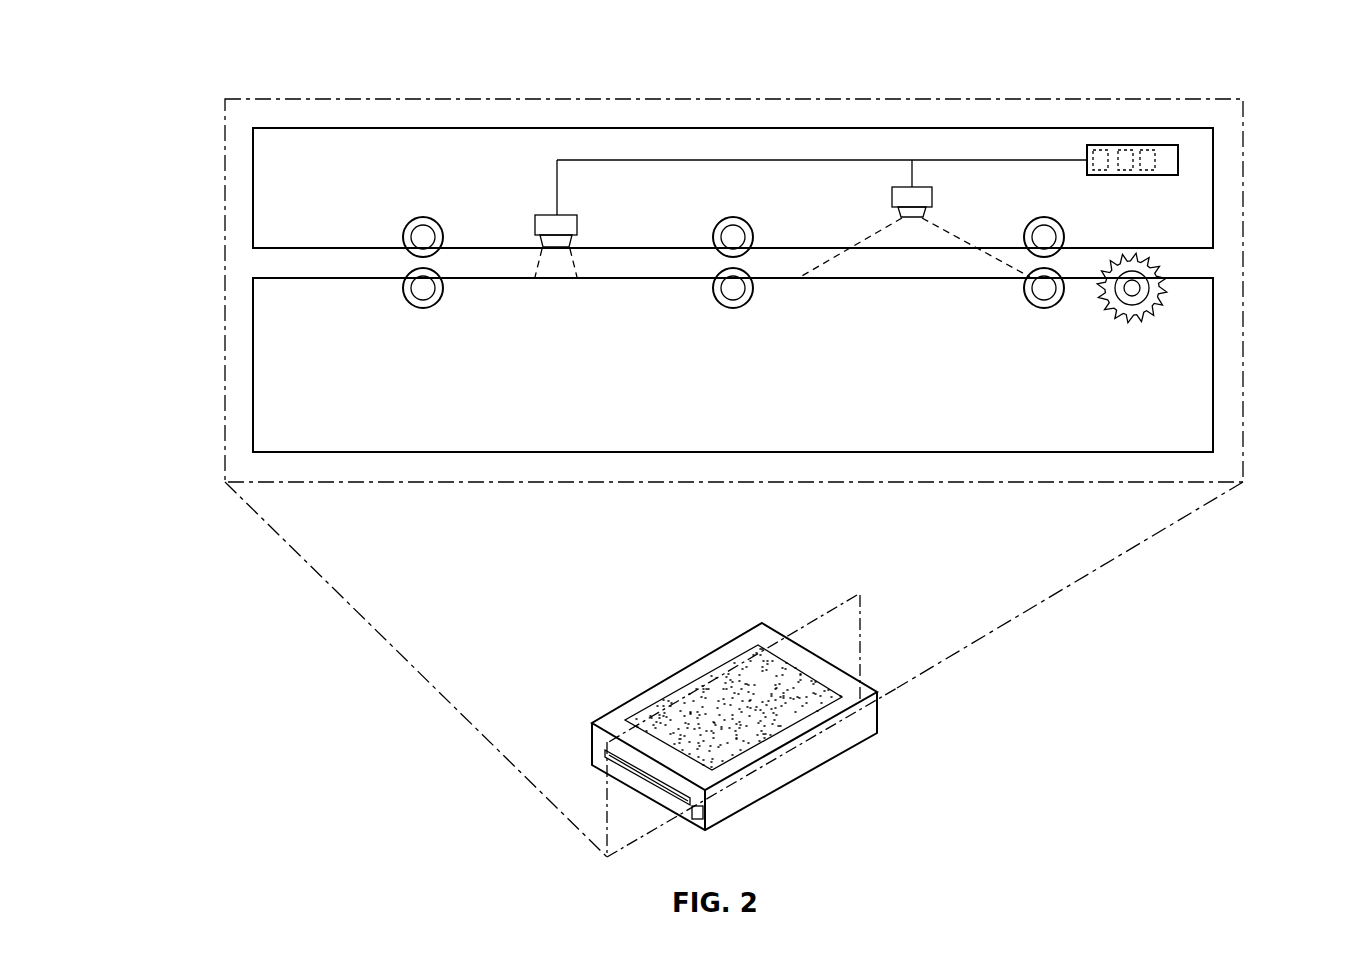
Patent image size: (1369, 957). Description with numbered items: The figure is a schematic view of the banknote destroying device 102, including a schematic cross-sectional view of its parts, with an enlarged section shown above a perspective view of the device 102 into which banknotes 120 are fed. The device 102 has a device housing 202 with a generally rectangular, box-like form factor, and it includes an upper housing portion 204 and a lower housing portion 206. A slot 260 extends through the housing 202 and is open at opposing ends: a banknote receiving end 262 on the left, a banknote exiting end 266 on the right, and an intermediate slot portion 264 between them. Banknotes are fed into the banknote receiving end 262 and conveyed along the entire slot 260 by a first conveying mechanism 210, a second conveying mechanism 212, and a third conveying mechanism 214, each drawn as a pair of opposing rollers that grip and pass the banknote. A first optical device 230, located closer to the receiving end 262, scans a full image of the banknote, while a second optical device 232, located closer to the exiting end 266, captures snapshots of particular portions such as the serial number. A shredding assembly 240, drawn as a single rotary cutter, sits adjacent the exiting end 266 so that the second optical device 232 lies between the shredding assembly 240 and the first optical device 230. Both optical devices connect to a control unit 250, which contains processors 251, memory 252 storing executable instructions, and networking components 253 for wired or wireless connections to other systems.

The banknote destroying device 102 is at (729, 128).
The banknotes 120 is at (637, 781).
The device housing 202 is at (253, 183).
The upper housing portion 204 is at (328, 183).
The lower housing portion 206 is at (328, 363).
The first conveying mechanism 210 is at (419, 217).
The second conveying mechanism 212 is at (721, 222).
The third conveying mechanism 214 is at (1063, 232).
The first optical device 230 is at (545, 215).
The second optical device 232 is at (892, 197).
The shredding assembly 240 is at (1125, 324).
The control unit 250 is at (1185, 91).
The processors 251 is at (1098, 148).
The memory 252 is at (1125, 148).
The networking components 253 is at (1147, 148).
The slot 260 is at (477, 273).
The banknote receiving end 262 is at (252, 264).
The intermediate slot portion 264 is at (637, 273).
The banknote exiting end 266 is at (1214, 262).